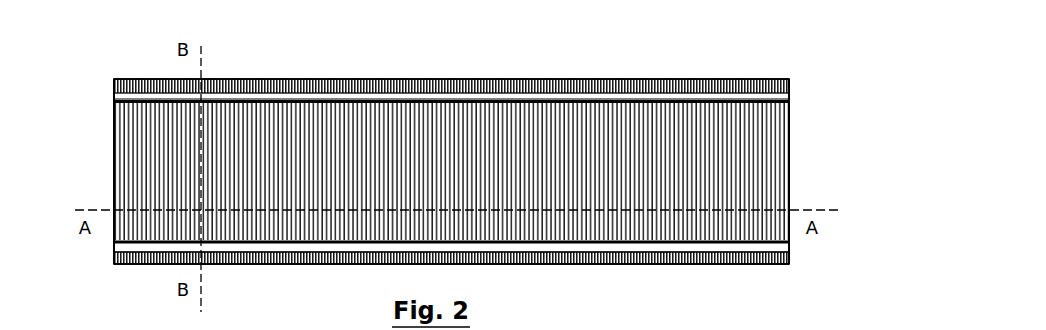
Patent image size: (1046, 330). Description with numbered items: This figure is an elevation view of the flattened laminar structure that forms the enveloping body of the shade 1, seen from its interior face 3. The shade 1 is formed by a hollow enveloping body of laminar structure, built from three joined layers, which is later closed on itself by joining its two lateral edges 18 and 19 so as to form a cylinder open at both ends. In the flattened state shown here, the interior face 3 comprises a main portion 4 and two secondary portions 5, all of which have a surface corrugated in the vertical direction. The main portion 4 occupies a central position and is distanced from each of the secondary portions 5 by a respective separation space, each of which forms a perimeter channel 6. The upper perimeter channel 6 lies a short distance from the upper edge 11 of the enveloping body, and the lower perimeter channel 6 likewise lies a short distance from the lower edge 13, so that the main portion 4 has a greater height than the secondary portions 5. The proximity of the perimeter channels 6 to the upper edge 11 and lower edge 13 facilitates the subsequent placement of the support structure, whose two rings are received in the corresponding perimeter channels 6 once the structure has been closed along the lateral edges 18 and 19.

The shade 1 is at (108, 35).
The interior face 3 is at (156, 127).
The main portion 4 is at (689, 123).
The secondary portions 5 is at (698, 85).
The perimeter channel 6 is at (295, 100).
The upper edge 11 is at (493, 79).
The lower edge 13 is at (552, 265).
The lateral edge 18 is at (114, 187).
The lateral edge 19 is at (792, 147).